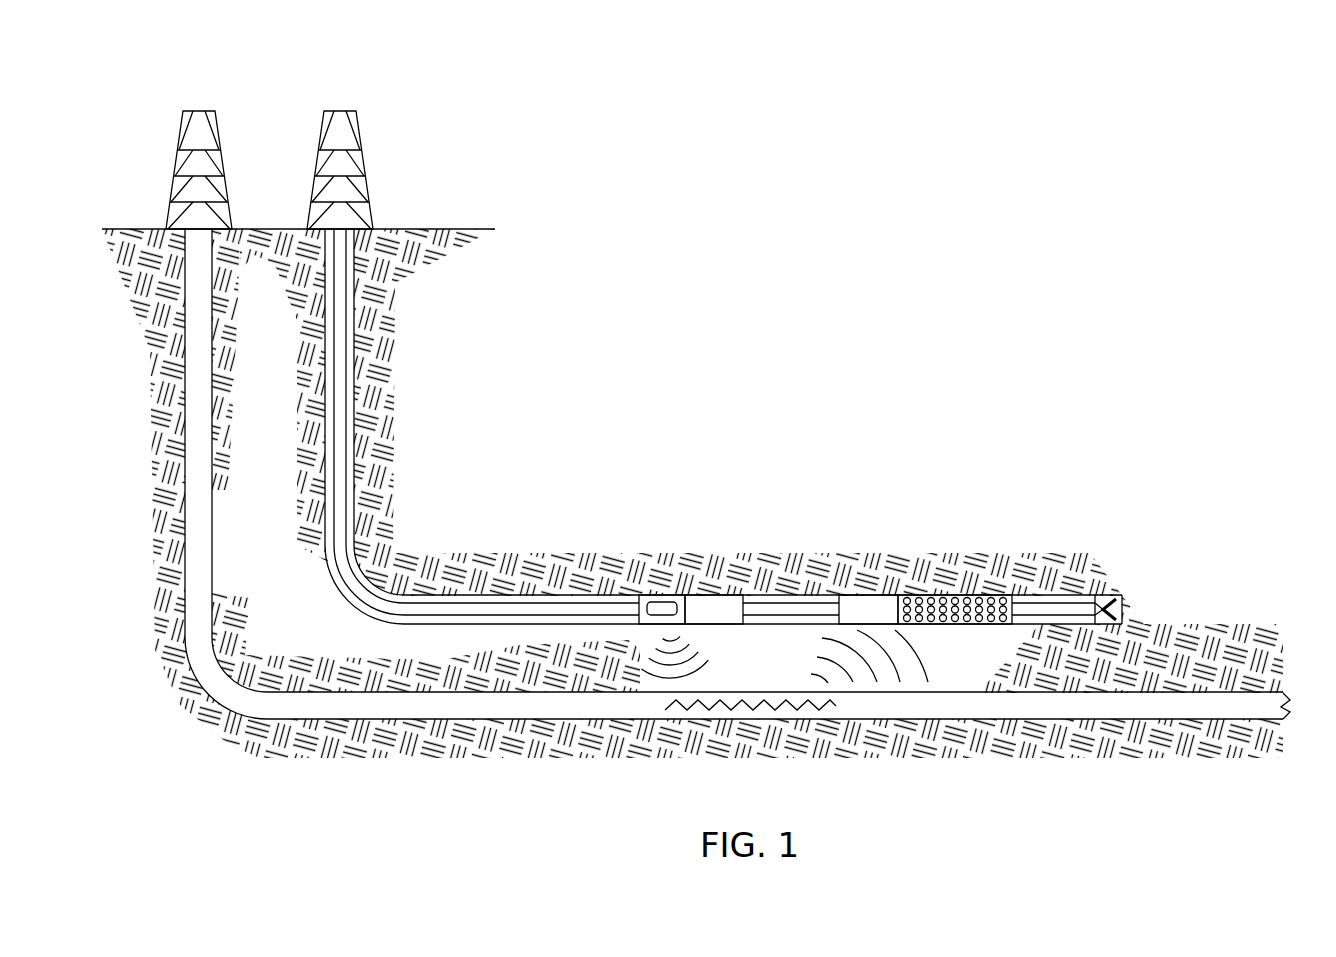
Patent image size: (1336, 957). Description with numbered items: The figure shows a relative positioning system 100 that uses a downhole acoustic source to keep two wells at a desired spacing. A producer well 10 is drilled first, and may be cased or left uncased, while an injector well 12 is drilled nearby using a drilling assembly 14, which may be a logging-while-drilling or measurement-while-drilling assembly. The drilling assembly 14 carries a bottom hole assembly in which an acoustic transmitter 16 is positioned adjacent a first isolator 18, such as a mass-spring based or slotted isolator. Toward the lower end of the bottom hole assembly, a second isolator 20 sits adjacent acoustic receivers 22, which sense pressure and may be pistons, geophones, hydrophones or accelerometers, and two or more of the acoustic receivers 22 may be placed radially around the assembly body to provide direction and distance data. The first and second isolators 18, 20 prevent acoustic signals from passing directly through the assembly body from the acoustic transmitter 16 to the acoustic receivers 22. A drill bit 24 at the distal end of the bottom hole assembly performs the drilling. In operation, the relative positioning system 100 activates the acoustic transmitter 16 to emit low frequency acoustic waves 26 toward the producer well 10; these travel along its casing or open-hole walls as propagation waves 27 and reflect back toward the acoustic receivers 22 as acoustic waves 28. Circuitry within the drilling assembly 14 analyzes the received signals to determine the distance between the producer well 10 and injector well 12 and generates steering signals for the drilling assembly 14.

The relative positioning system 100 is at (529, 124).
The producer well 10 is at (196, 382).
The injector well 12 is at (340, 442).
The drilling assembly 14 is at (345, 522).
The acoustic transmitter 16 is at (657, 594).
The first isolator 18 is at (725, 594).
The second isolator 20 is at (872, 594).
The acoustic receivers 22 is at (965, 594).
The drill bit 24 is at (1108, 592).
The acoustic waves 26 is at (712, 654).
The propagation waves 27 is at (793, 701).
The acoustic waves 28 is at (918, 646).